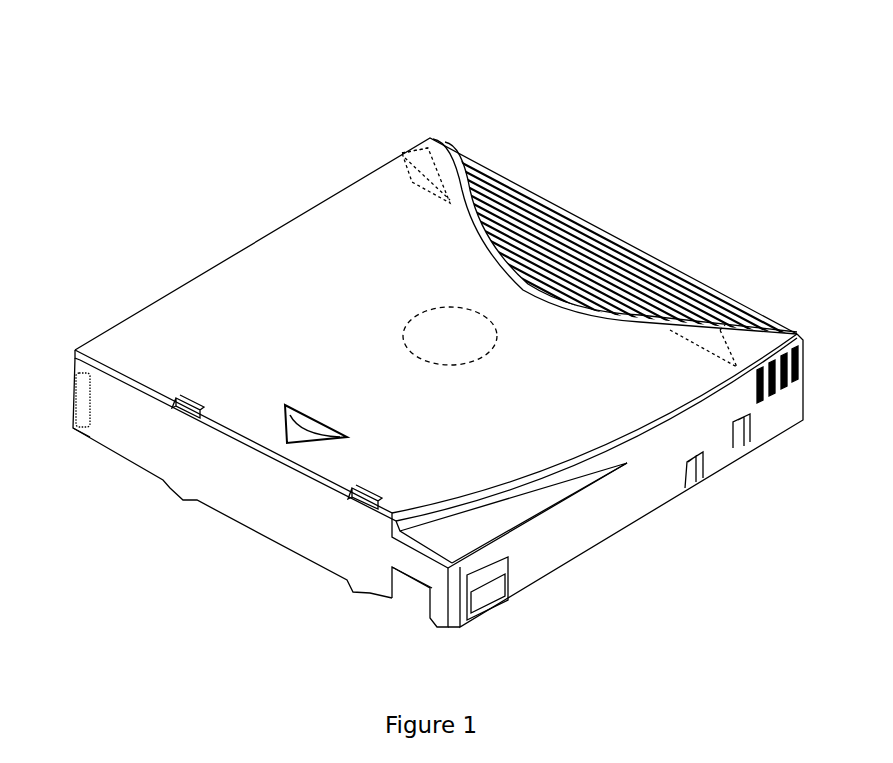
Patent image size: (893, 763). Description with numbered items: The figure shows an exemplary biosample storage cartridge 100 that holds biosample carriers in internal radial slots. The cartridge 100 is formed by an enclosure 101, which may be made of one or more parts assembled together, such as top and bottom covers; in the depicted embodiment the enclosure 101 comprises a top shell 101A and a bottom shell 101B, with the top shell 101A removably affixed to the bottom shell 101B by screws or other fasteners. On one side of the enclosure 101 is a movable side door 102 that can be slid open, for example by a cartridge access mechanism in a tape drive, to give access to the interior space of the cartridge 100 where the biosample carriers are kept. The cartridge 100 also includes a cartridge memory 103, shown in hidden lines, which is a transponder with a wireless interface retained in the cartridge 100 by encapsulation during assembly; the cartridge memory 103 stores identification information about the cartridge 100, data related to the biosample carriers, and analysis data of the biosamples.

The biosample storage cartridge 100 is at (262, 66).
The enclosure 101 is at (630, 508).
The top shell 101A is at (135, 335).
The bottom shell 101B is at (105, 430).
The movable side door 102 is at (83, 393).
The cartridge memory 103 is at (413, 152).